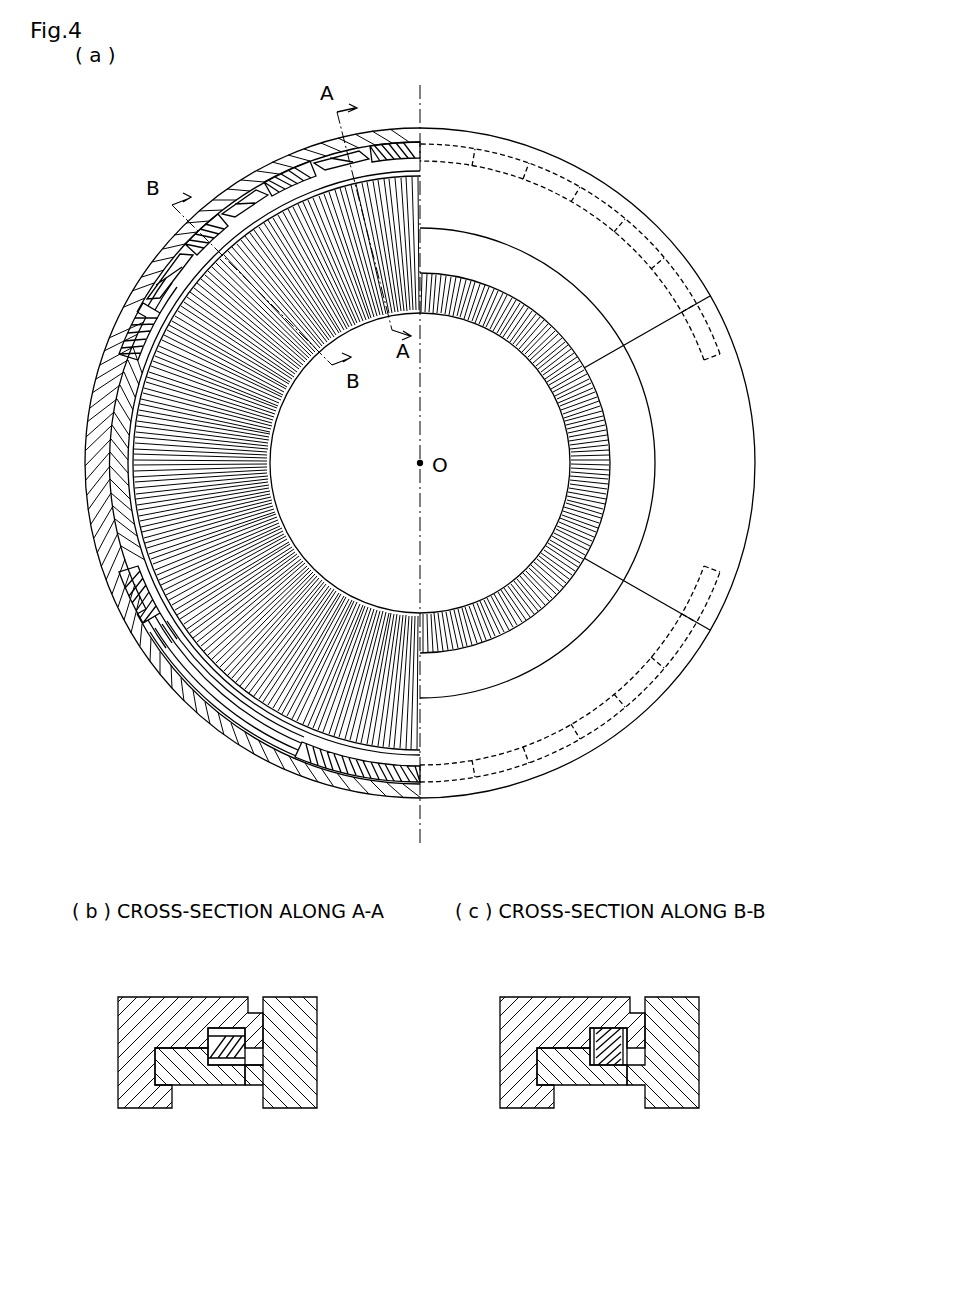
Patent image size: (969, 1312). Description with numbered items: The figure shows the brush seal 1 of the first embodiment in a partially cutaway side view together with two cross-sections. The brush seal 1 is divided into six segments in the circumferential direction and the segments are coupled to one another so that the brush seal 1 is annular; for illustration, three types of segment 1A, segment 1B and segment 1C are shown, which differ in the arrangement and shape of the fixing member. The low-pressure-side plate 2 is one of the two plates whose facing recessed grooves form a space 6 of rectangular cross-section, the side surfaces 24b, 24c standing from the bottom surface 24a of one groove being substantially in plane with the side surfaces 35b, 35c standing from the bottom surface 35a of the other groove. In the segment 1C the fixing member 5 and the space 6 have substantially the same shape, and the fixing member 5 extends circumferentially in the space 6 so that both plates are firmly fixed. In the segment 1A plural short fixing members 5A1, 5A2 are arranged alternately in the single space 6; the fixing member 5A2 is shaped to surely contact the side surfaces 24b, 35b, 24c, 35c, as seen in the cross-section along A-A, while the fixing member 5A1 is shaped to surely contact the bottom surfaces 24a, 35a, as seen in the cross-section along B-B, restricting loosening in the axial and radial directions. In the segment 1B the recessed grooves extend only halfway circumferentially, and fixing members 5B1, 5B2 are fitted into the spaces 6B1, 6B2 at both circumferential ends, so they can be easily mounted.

The brush seal 1 is at (735, 178).
The segment 1A is at (366, 117).
The segment 1B is at (74, 418).
The segment 1C is at (214, 756).
The low-pressure-side plate 2 is at (562, 700).
The fixing member 5 is at (262, 740).
The fixing member 5A1 is at (400, 146).
The fixing member 5A2 is at (338, 160).
The fixing member 5B1 is at (160, 300).
The fixing member 5B2 is at (160, 625).
The space 6 is at (330, 768).
The space 6B1 is at (128, 325).
The space 6B2 is at (132, 598).
The bottom surface 24a is at (590, 1058).
The side surface 24b is at (246, 1070).
The side surface 24c is at (218, 1066).
The bottom surface 35a is at (590, 1040).
The side surface 35b is at (250, 1038).
The side surface 35c is at (218, 1030).